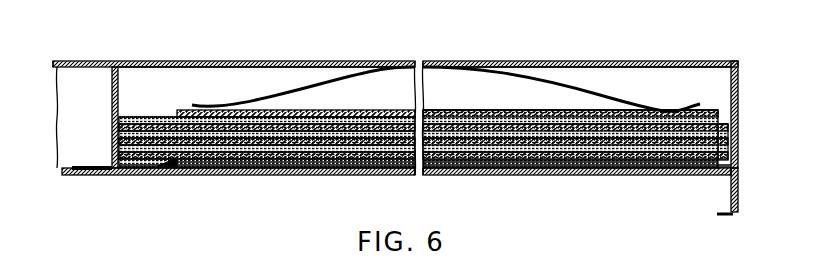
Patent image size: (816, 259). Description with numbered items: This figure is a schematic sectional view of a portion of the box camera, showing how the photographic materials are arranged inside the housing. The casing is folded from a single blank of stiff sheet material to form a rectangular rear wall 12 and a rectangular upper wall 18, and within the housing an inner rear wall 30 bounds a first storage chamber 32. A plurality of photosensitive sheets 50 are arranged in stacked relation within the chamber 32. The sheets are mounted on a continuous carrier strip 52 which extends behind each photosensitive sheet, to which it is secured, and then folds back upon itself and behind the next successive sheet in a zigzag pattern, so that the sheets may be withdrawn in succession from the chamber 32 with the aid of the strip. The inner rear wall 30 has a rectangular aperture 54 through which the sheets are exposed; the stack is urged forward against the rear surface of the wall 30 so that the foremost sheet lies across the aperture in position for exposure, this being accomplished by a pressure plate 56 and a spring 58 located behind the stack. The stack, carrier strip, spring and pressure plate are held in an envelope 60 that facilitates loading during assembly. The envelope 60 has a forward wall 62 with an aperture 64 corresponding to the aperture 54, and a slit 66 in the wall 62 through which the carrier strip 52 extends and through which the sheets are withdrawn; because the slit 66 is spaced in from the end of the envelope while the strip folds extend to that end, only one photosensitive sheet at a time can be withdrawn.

The rear wall 12 is at (254, 61).
The upper wall 18 is at (739, 188).
The inner rear wall 30 is at (136, 176).
The first storage chamber 32 is at (194, 82).
The photosensitive sheets 50 is at (533, 173).
The carrier strip 52 is at (141, 117).
The aperture 54 is at (205, 176).
The pressure plate 56 is at (352, 110).
The spring 58 is at (570, 88).
The envelope 60 is at (108, 80).
The forward wall 62 is at (120, 176).
The aperture 64 is at (212, 176).
The slit 66 is at (165, 176).